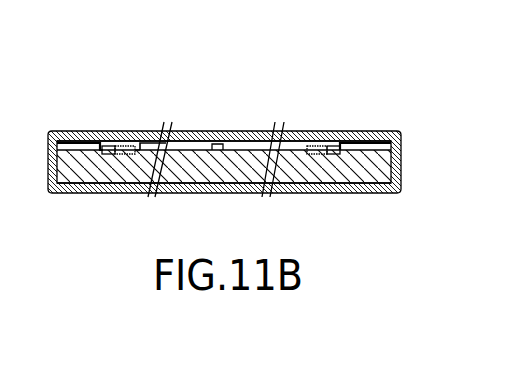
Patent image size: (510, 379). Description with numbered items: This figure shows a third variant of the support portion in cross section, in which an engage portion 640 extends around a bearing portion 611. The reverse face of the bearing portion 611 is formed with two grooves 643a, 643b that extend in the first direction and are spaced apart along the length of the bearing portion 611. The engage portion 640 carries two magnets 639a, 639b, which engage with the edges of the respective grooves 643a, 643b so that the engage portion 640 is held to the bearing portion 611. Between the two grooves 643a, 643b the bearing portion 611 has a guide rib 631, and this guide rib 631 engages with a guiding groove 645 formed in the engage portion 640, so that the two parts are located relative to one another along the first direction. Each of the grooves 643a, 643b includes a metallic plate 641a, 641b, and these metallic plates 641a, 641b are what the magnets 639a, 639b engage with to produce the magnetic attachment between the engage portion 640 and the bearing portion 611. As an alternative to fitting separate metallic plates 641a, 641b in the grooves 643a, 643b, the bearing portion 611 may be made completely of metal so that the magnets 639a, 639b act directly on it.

The bearing portion 611 is at (72, 191).
The guide rib 631 is at (228, 191).
The magnet 639a is at (110, 148).
The magnet 639b is at (356, 141).
The engage portion 640 is at (292, 191).
The metallic plate 641a is at (125, 191).
The metallic plate 641b is at (347, 191).
The groove 643a is at (147, 142).
The groove 643b is at (306, 144).
The guiding groove 645 is at (218, 143).